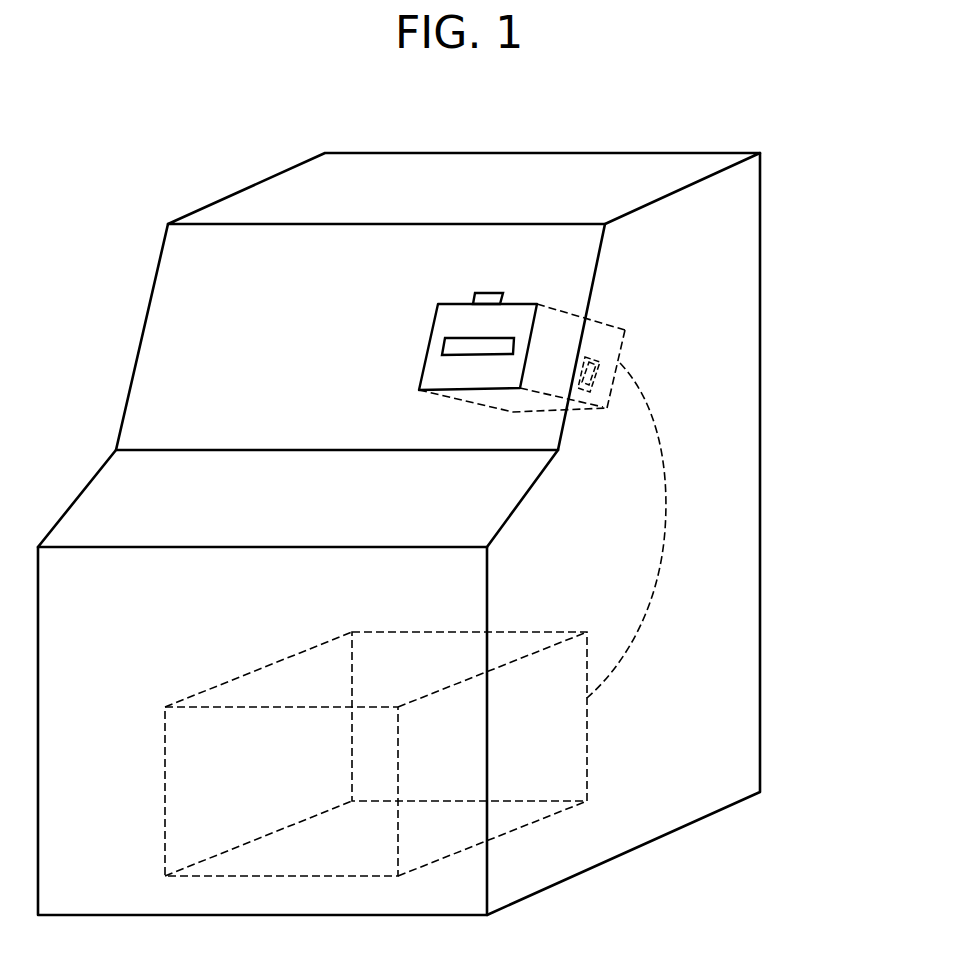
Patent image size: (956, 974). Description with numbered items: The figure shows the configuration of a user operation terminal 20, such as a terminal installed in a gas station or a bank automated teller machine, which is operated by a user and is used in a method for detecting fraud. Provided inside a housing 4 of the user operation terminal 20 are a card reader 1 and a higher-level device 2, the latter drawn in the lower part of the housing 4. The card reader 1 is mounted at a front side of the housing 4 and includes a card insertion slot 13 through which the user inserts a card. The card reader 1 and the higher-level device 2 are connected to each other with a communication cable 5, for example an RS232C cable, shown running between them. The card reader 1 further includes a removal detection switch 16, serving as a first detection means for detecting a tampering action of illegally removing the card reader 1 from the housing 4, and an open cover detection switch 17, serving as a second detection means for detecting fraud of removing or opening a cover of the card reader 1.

The user operation terminal 20 is at (459, 534).
The housing 4 is at (748, 180).
The card reader 1 is at (506, 294).
The card insertion slot 13 is at (445, 343).
The removal detection switch 16 is at (490, 291).
The open cover detection switch 17 is at (595, 342).
The communication cable 5 is at (668, 493).
The higher-level device 2 is at (572, 742).